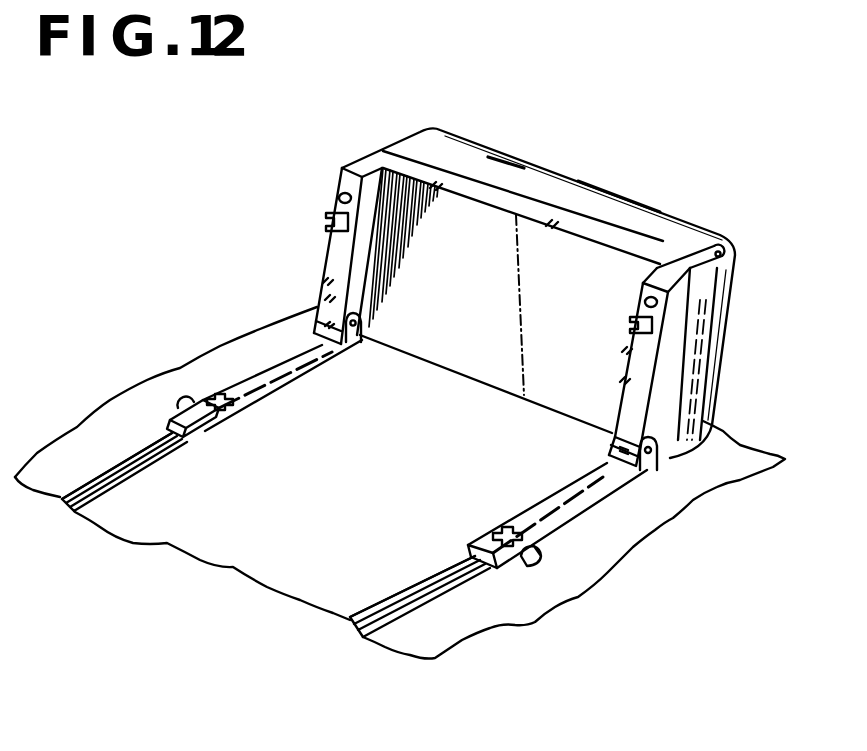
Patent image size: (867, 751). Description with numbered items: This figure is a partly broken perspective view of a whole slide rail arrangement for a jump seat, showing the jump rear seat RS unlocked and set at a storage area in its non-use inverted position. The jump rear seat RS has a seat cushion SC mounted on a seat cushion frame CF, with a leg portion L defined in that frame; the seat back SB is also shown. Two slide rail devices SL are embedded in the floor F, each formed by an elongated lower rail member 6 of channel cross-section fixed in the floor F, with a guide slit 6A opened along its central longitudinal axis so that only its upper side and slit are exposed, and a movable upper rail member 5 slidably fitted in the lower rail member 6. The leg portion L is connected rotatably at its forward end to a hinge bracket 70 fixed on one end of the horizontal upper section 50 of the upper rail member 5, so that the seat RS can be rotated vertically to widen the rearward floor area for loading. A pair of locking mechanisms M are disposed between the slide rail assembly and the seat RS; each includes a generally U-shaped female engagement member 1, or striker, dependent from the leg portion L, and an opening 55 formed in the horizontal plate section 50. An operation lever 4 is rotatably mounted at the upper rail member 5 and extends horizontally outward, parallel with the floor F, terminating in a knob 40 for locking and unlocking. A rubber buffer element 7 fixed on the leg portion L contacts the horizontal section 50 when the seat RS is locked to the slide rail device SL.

The jump rear seat RS is at (517, 118).
The seat cushion frame CF is at (533, 200).
The slide rail device SL is at (227, 198).
The seat back side SB is at (716, 300).
The seat cushion SC is at (700, 324).
The leg portion L is at (327, 268).
The rubber buffer element 7 is at (342, 195).
The female engagement member 1 is at (327, 227).
The locking mechanism M is at (223, 276).
The hinge bracket 70 is at (353, 342).
The horizontal upper section of upper rail member 50 is at (263, 395).
The opening 55 is at (217, 393).
The knob 40 is at (176, 405).
The operation lever 4 is at (553, 558).
The upper rail member 5 is at (202, 447).
The lower rail member 6 is at (107, 497).
The guide slit 6A is at (123, 462).
The floor F is at (305, 525).